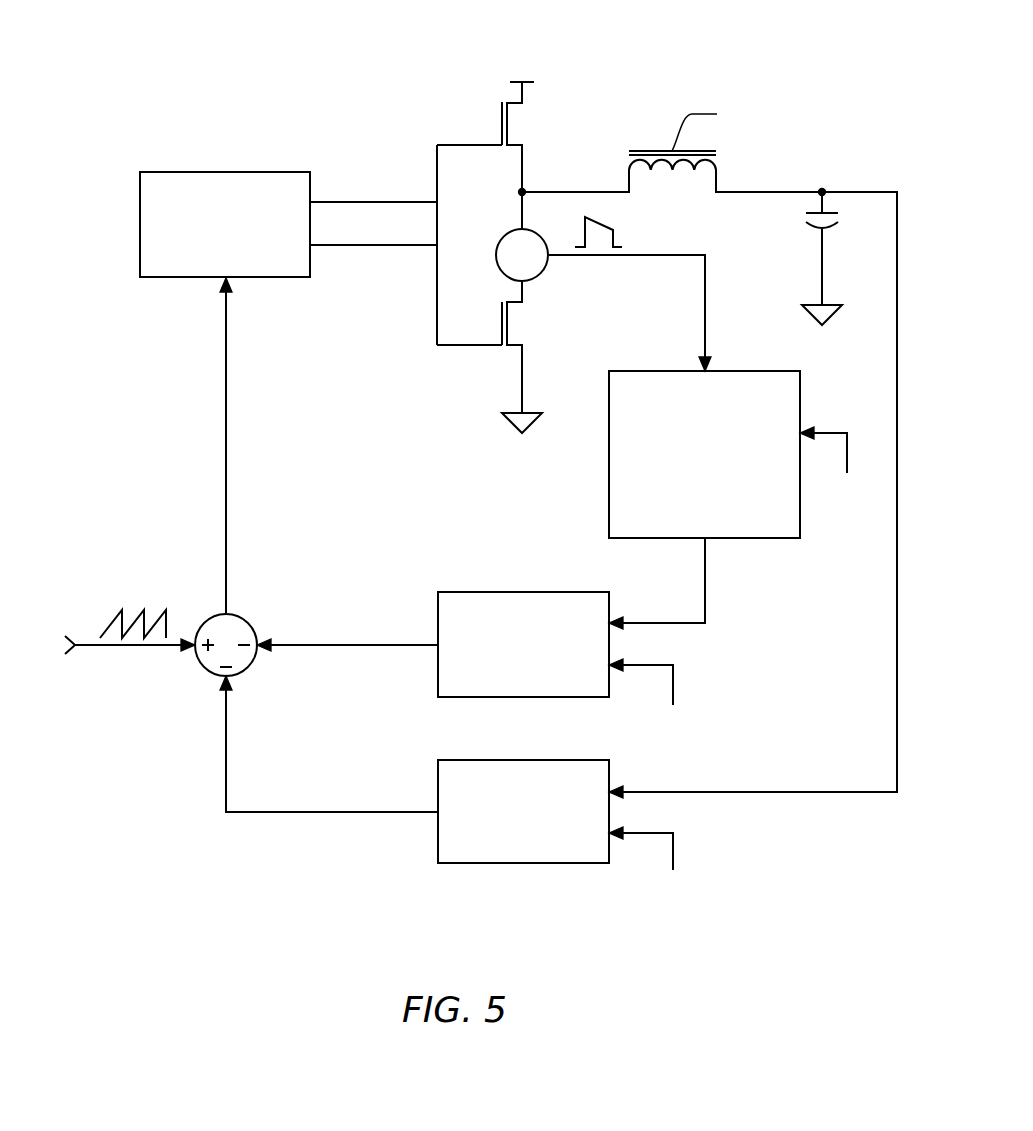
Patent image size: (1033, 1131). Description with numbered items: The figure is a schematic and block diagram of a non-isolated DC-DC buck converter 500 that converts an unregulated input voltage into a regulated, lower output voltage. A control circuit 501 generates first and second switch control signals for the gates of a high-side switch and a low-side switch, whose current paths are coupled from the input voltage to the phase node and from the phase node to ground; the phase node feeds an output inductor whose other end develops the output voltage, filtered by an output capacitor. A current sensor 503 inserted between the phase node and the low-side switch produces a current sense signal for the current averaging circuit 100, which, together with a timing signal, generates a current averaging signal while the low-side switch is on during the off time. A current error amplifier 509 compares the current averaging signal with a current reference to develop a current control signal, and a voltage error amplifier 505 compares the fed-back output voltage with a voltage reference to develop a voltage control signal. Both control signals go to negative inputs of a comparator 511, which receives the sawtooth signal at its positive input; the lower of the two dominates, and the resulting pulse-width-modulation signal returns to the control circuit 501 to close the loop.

The non-isolated DC-DC buck converter 500 is at (220, 76).
The PWM control circuit 501 is at (257, 277).
The current sensor 503 is at (539, 273).
The current averaging circuit 100 is at (609, 500).
The current error amplifier 509 is at (522, 592).
The voltage error amplifier 505 is at (522, 760).
The PWM comparator 511 is at (197, 660).